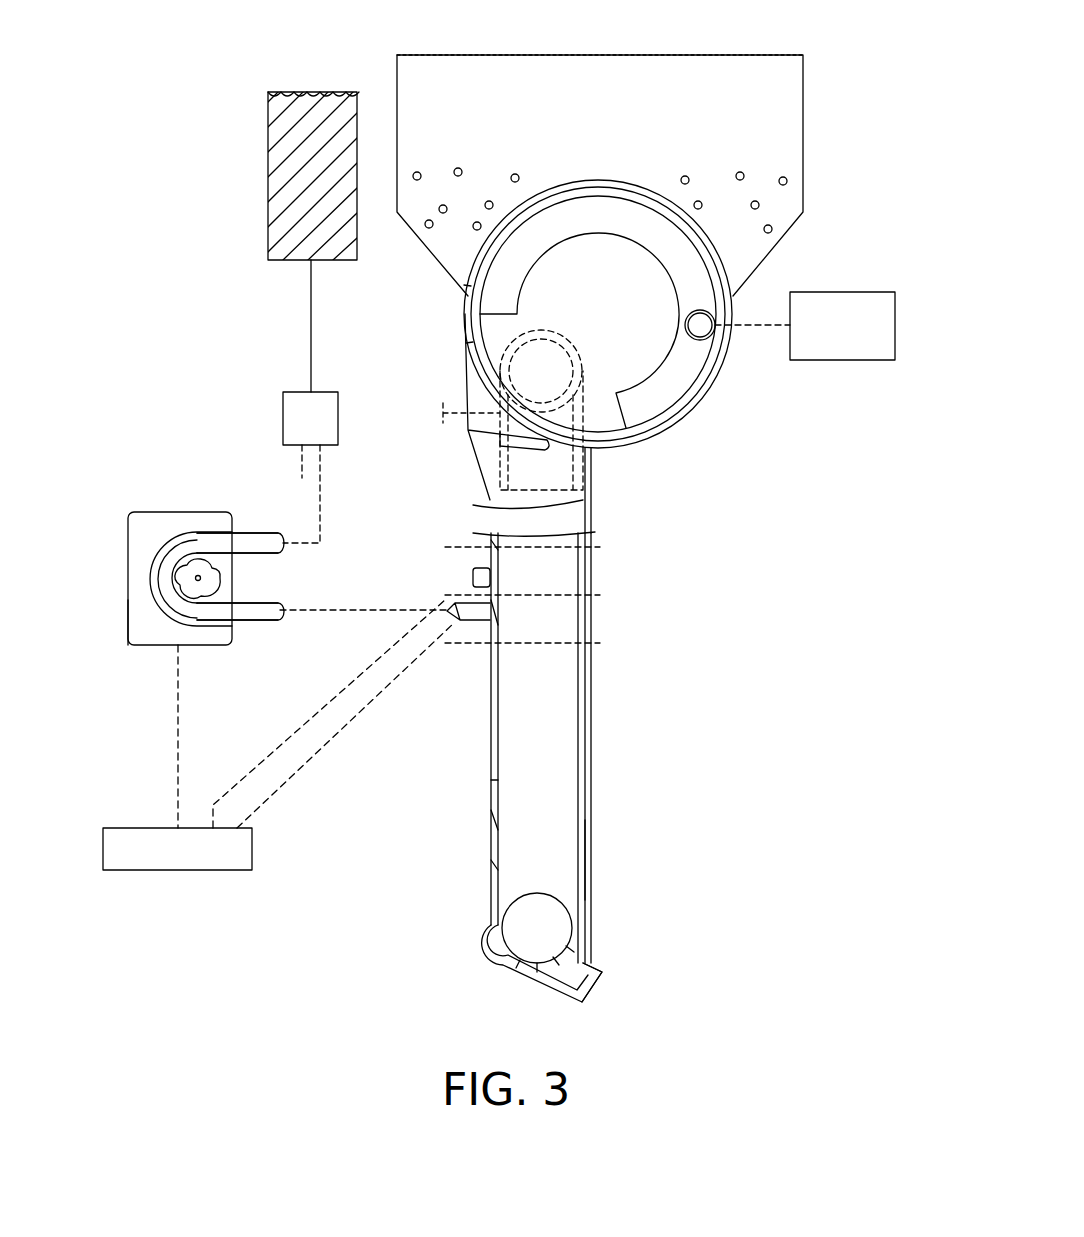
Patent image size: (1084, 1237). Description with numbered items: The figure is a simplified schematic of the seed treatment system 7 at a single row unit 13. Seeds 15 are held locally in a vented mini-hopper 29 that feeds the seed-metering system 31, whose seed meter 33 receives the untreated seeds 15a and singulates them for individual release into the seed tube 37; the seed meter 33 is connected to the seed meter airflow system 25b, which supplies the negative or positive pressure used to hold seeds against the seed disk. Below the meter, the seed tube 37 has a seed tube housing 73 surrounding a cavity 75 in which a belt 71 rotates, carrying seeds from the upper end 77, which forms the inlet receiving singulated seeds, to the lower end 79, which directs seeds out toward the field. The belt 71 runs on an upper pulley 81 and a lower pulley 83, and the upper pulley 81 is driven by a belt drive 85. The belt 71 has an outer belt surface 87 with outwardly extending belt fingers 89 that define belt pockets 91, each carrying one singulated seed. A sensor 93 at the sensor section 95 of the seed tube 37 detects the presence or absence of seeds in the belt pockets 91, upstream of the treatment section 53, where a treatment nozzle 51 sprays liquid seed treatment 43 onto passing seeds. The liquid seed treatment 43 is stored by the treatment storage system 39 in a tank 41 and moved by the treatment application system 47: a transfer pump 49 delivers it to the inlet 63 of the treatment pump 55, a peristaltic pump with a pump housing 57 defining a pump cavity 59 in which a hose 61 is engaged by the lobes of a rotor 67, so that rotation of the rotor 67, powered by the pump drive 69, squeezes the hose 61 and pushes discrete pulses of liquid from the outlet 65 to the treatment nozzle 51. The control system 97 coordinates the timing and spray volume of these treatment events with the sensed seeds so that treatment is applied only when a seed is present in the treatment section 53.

The seed treatment system 7 is at (170, 165).
The row unit 13 is at (660, 30).
The seeds 15 is at (788, 140).
The untreated seeds 15a is at (684, 176).
The seed meter airflow system 25b is at (840, 366).
The vented mini-hopper 29 is at (780, 55).
The seed-metering system 31 is at (813, 232).
The seed meter 33 is at (740, 300).
The seed tube 37 is at (612, 572).
The treatment storage system 39 is at (290, 70).
The tank 41 is at (266, 92).
The liquid seed treatment 43 is at (290, 146).
The treatment application system 47 is at (395, 458).
The transfer pump 49 is at (340, 390).
The treatment nozzle 51 is at (455, 618).
The treatment section 53 is at (465, 648).
The treatment pump 55 is at (138, 664).
The pump housing 57 is at (140, 494).
The pump cavity 59 is at (165, 535).
The hose 61 is at (200, 538).
The inlet 63 is at (236, 515).
The outlet 65 is at (243, 598).
The rotor 67 is at (210, 576).
The pump drive 69 is at (230, 555).
The belt 71 is at (588, 740).
The seed tube housing 73 is at (592, 858).
The cavity 75 is at (548, 750).
The upper end 77 is at (610, 465).
The lower end 79 is at (600, 940).
The upper pulley 81 is at (537, 350).
The lower pulley 83 is at (535, 928).
The belt drive 85 is at (557, 423).
The outer belt surface 87 is at (490, 800).
The belt fingers 89 is at (492, 826).
The belt pockets 91 is at (487, 860).
The sensor 93 is at (470, 572).
The sensor section 95 is at (487, 547).
The control system 97 is at (175, 898).